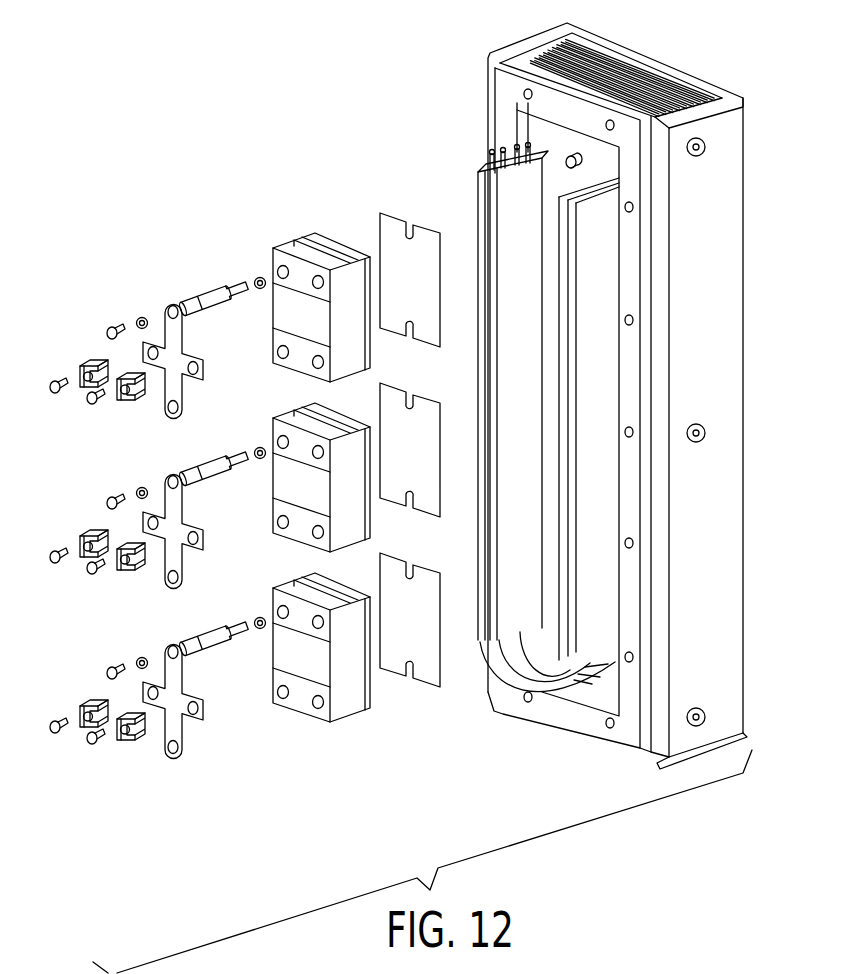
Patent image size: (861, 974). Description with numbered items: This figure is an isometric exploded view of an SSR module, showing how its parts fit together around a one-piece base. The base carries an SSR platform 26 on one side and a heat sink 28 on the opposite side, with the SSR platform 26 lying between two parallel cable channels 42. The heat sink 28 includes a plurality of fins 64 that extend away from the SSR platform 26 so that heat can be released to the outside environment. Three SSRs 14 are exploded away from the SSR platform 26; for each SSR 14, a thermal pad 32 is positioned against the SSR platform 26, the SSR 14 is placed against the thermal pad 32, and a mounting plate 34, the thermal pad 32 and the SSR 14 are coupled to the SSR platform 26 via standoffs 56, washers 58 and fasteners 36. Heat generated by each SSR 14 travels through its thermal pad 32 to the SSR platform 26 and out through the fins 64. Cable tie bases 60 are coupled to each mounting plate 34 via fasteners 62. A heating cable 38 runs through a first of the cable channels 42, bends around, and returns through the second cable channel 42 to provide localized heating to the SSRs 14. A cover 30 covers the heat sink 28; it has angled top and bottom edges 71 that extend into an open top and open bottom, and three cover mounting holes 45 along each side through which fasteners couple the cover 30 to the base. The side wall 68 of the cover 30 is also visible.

The SSR 14 is at (292, 245).
The SSR platform 26 is at (603, 163).
The heat sink 28 is at (671, 75).
The cover 30 is at (743, 257).
The thermal pad 32 is at (390, 225).
The mounting plate 34 is at (163, 312).
The fastener 36 is at (110, 325).
The heating cable 38 is at (545, 693).
The cable channel 42 is at (470, 163).
The cover mounting hole 45 is at (707, 146).
The standoff 56 is at (216, 290).
The washer 58 is at (138, 662).
The cable tie base 60 is at (83, 360).
The fastener 62 is at (88, 742).
The fin 64 is at (607, 58).
The side wall 68 is at (727, 360).
The angled top and bottom edges 71 is at (722, 92).